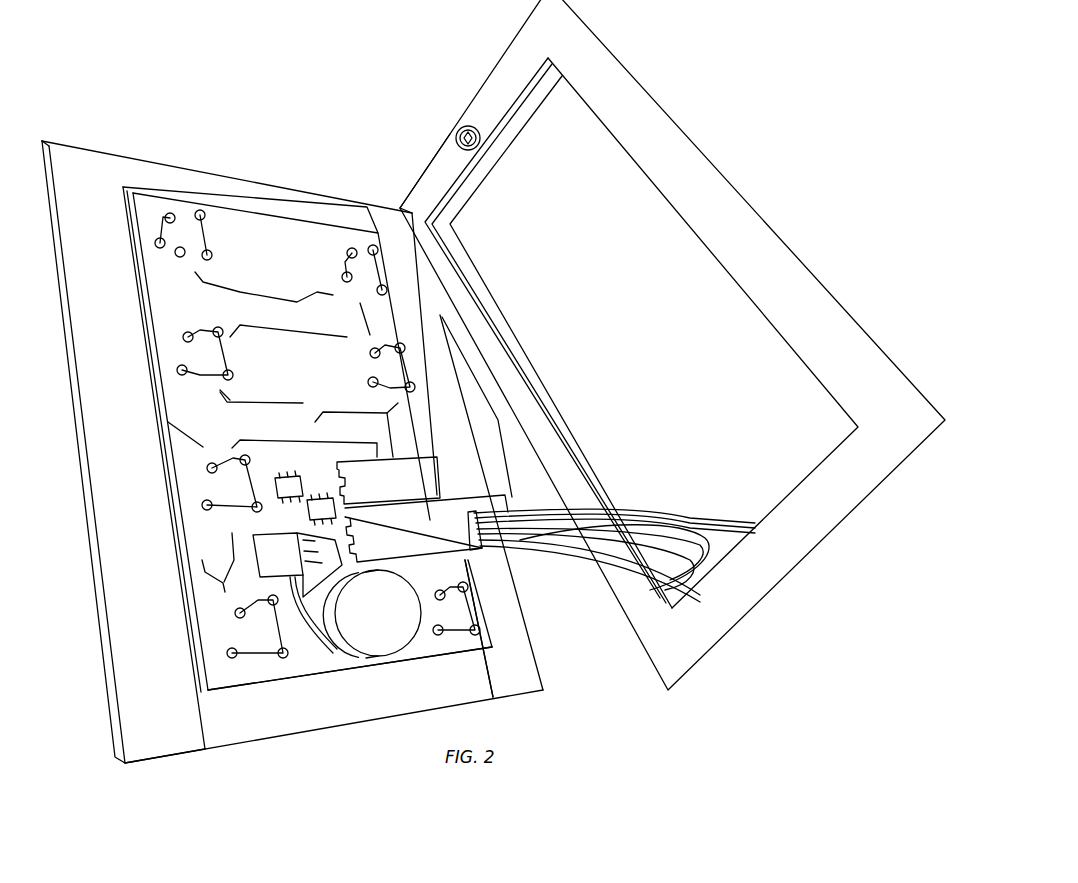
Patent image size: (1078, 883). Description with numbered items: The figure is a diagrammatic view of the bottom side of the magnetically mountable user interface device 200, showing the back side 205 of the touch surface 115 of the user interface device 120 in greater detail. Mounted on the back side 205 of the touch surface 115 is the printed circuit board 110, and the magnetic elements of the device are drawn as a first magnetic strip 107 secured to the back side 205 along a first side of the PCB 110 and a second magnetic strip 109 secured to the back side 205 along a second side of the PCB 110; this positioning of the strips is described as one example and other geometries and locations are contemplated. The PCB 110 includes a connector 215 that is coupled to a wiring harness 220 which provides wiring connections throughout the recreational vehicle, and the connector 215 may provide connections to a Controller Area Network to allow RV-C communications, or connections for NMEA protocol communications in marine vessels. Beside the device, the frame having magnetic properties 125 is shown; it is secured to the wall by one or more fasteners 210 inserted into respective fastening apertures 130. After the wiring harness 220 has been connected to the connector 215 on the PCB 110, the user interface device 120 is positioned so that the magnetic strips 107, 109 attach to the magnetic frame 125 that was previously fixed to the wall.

The electronic device assembly 200 is at (328, 28).
The user interface device 120 is at (175, 152).
The first magnetic strip 107 is at (160, 738).
The second magnetic strip 109 is at (513, 659).
The printed circuit board 110 is at (265, 214).
The touch surface 115 is at (272, 736).
The frame having magnetic properties 125 is at (657, 102).
The fastening aperture 130 is at (458, 140).
The back side 205 is at (335, 700).
The fastener 210 is at (458, 128).
The connector 215 is at (415, 490).
The wiring harness 220 is at (508, 502).